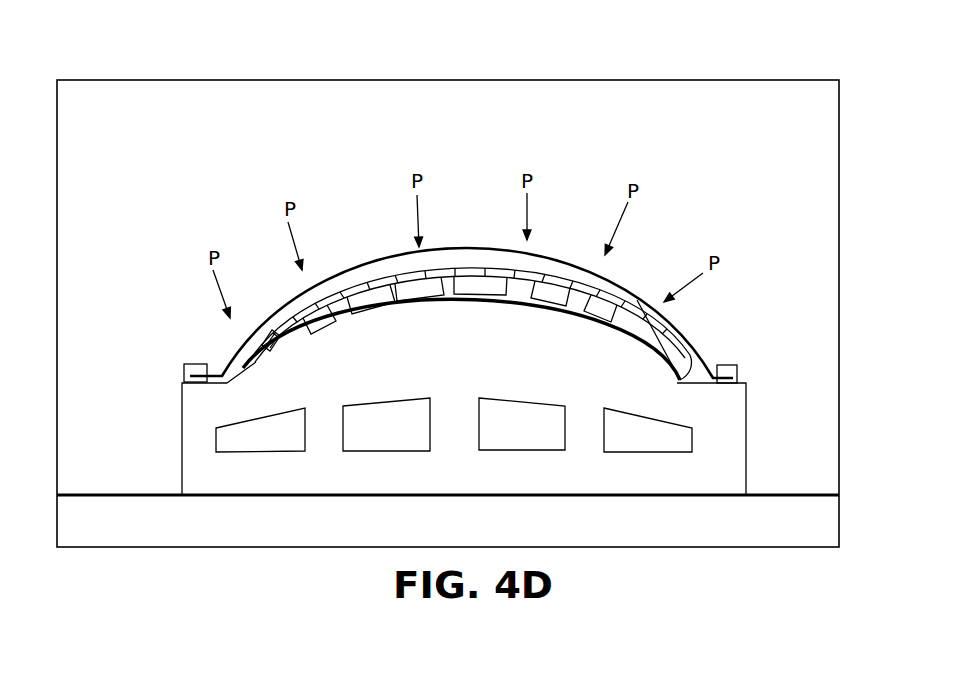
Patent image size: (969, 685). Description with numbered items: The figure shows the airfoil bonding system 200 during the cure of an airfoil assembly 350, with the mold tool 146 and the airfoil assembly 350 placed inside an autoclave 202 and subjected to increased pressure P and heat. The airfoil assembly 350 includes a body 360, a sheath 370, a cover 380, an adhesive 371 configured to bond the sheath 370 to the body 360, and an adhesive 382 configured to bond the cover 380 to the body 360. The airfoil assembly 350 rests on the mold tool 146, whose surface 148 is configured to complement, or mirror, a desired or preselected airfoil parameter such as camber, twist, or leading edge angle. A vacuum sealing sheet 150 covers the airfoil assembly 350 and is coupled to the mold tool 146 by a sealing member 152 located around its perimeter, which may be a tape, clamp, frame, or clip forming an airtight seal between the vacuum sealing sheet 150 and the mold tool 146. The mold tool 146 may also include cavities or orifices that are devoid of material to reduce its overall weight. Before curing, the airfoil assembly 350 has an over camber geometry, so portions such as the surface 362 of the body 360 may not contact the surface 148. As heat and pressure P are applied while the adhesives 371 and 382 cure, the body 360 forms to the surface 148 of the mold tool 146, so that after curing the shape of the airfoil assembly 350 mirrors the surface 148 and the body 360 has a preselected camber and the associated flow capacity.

The autoclave 202 is at (158, 80).
The airfoil bonding system 200 is at (190, 250).
The mold tool 146 is at (440, 378).
The sealing member 152 is at (187, 367).
The vacuum sealing sheet 150 is at (463, 250).
The airfoil assembly 350 is at (551, 257).
The sheath 370 is at (246, 364).
The cover 380 is at (375, 280).
The body 360 is at (418, 303).
The surface 362 is at (587, 302).
The adhesive 371 is at (249, 355).
The adhesive 382 is at (637, 296).
The surface 148 is at (678, 365).